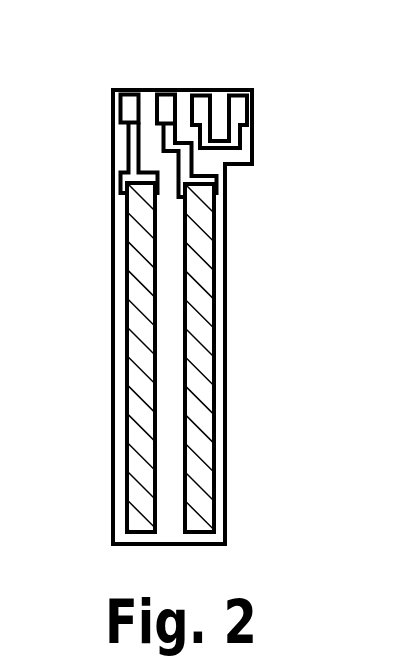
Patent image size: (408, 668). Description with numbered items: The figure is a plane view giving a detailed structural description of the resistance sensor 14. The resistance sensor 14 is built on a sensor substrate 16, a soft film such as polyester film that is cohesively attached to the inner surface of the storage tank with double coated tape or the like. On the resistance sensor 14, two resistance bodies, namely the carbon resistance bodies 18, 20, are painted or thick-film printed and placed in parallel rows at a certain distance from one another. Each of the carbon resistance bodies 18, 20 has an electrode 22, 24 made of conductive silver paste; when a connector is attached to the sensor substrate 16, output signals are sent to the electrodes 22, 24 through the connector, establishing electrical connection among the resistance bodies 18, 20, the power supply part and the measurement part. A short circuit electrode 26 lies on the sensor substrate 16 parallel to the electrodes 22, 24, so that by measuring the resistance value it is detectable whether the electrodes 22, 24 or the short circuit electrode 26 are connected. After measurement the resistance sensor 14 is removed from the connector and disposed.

The resistance sensor 14 is at (182, 289).
The sensor substrate 16 is at (112, 278).
The carbon resistance body 18 is at (131, 397).
The carbon resistance body 20 is at (203, 447).
The electrode 22 is at (127, 105).
The electrode 24 is at (165, 101).
The short circuit electrode 26 is at (237, 117).